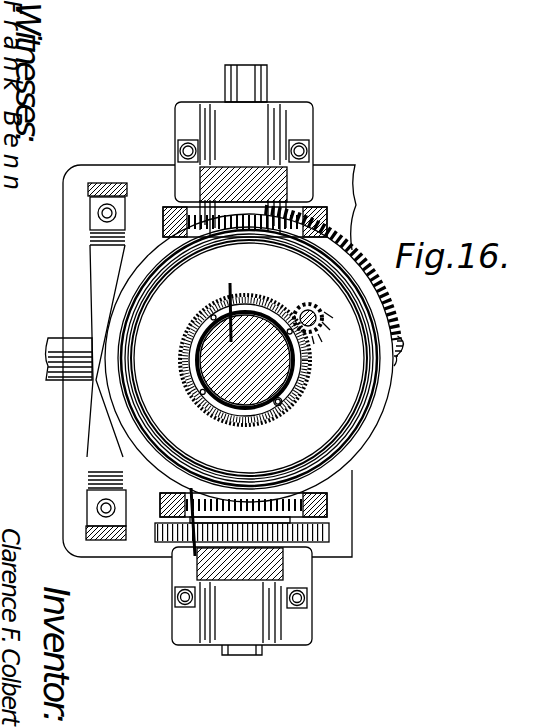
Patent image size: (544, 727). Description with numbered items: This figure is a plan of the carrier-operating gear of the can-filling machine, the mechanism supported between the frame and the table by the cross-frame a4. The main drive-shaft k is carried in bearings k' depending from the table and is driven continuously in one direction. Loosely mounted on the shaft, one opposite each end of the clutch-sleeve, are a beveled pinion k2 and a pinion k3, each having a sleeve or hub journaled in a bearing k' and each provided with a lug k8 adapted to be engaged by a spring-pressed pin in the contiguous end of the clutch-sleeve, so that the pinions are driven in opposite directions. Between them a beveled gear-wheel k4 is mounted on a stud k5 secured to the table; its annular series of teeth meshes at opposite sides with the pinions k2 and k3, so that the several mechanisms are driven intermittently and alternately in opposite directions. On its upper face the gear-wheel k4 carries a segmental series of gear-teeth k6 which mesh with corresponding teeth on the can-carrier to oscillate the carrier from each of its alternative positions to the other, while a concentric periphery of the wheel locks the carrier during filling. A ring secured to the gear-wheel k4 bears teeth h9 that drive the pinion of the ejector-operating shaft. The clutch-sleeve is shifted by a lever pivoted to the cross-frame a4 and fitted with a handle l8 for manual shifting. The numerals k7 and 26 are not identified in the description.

The main drive-shaft k is at (260, 148).
The bearings k' is at (262, 371).
The beveled pinion k2 is at (318, 513).
The pinion k3 is at (333, 222).
The beveled gear-wheel k4 is at (197, 503).
The stud k5 is at (233, 302).
The segmental series of gear-teeth k6 is at (303, 228).
The small gear k7 is at (318, 328).
The lug k8 is at (290, 395).
The teeth h9 is at (187, 343).
The handle l8 is at (62, 368).
The cross-frame a4 is at (92, 447).
The spur gear 26 is at (330, 535).